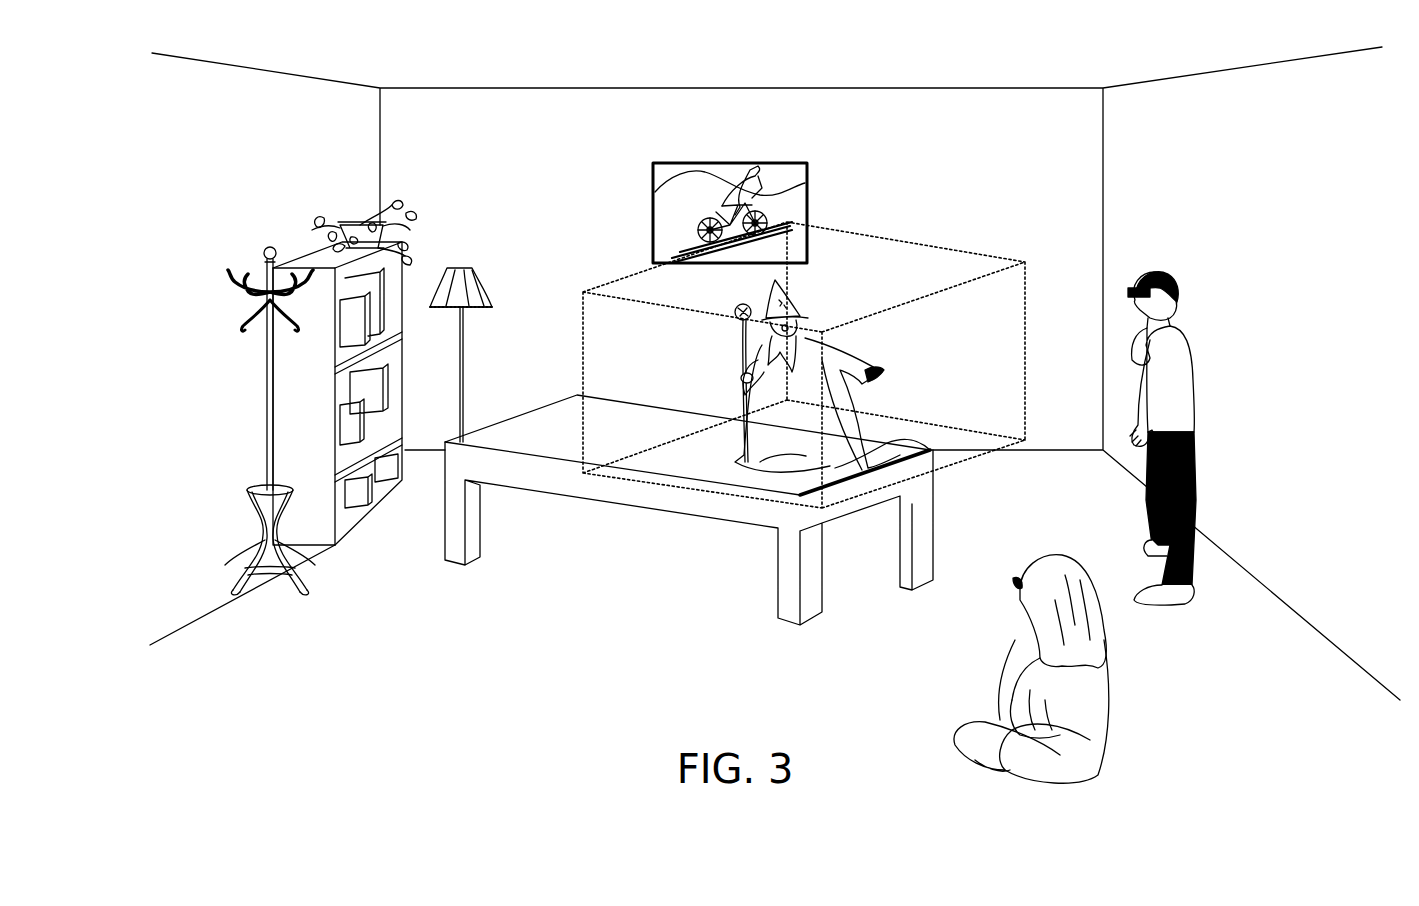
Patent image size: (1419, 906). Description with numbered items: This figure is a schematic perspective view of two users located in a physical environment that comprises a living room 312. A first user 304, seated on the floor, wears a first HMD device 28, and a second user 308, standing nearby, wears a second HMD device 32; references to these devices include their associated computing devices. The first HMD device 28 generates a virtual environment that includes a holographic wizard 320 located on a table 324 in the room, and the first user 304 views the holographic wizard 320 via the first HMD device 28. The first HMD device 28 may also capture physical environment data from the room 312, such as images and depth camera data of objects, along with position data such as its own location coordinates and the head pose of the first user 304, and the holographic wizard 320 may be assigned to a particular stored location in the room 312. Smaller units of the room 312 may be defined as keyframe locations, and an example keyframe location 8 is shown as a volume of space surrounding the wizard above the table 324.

The living room 312 is at (875, 106).
The keyframe location 8 is at (910, 240).
The holographic wizard 320 is at (817, 376).
The table 324 is at (887, 443).
The second HMD device 32 is at (1130, 292).
The second user 308 is at (1161, 438).
The first HMD device 28 is at (1013, 582).
The first user 304 is at (1059, 669).